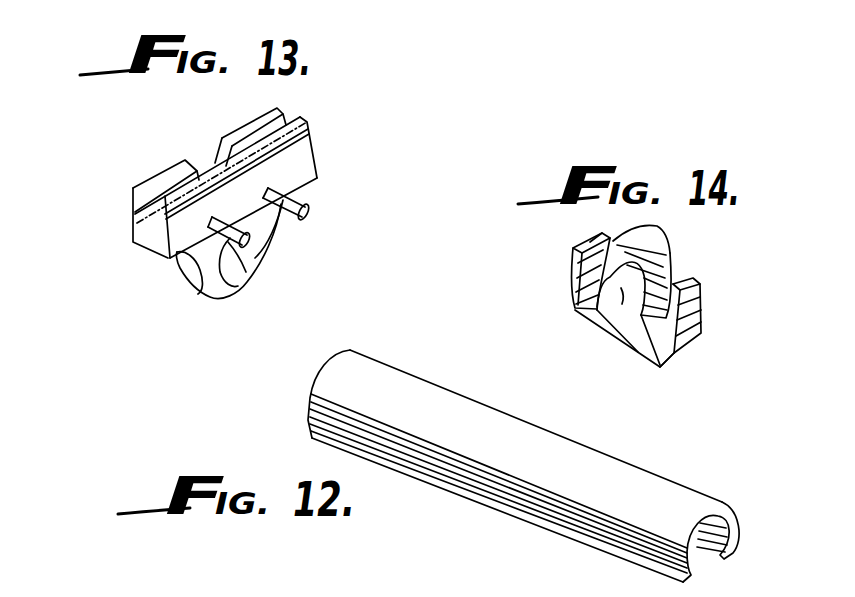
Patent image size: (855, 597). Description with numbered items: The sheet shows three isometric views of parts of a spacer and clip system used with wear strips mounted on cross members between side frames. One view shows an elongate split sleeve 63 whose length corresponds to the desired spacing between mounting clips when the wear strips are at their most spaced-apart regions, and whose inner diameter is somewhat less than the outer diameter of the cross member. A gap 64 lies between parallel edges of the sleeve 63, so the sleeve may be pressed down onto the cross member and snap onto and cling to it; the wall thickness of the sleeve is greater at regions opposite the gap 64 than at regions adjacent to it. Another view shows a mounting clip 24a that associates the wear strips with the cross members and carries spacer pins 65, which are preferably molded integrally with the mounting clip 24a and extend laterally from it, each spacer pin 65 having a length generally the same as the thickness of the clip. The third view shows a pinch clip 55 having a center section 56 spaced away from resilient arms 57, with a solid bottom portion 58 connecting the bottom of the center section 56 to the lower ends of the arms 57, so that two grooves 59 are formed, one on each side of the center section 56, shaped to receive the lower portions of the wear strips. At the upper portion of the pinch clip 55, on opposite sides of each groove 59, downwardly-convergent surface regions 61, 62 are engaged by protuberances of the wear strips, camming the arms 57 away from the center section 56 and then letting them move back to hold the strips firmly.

In FIG. 13, the mounting clip 24a is at (142, 170).
In FIG. 13, the spacer pin 65 is at (308, 205).
In FIG. 14, the pinch clip 55 is at (563, 307).
In FIG. 14, the center section 56 is at (602, 327).
In FIG. 14, the resilient arms 57 is at (572, 260).
In FIG. 14, the solid bottom portion 58 is at (589, 317).
In FIG. 14, the grooves 59 is at (578, 277).
In FIG. 14, the downwardly-convergent surface region 61 is at (659, 229).
In FIG. 14, the downwardly-convergent surface region 62 is at (590, 242).
In FIG. 12, the split sleeve 63 is at (415, 380).
In FIG. 12, the gap 64 is at (704, 565).